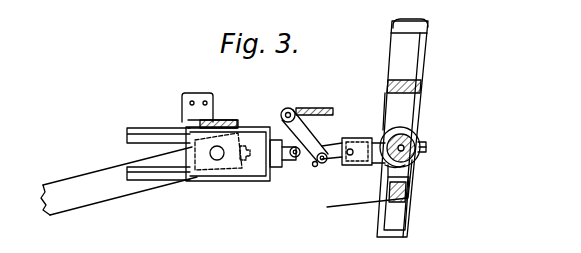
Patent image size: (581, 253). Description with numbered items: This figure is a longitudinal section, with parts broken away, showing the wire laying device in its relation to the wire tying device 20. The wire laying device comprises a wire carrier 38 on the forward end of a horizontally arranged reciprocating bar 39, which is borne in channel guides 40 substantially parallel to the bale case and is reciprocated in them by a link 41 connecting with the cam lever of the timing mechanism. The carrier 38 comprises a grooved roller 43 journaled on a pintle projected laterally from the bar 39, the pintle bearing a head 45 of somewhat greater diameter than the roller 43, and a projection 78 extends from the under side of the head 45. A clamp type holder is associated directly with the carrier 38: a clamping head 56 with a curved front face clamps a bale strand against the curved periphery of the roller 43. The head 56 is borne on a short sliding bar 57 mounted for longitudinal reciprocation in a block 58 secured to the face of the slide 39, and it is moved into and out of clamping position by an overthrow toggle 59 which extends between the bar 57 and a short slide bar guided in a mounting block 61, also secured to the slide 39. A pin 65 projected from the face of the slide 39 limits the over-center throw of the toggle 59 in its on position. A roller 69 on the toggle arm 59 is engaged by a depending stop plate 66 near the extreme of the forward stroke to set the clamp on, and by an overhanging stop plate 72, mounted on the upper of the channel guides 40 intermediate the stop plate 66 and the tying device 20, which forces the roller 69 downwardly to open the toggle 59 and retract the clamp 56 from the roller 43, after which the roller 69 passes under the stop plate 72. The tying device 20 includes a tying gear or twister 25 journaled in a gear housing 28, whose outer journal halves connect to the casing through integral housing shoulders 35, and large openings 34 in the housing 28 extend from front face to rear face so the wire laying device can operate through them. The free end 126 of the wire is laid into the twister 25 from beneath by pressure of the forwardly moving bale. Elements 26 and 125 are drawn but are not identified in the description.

The wire tying device 20 is at (413, 129).
The gear housing 28 is at (395, 25).
The housing shoulder 35 is at (407, 80).
The clamping head 56 is at (382, 128).
The slot 26 is at (400, 215).
The tying gear 25 is at (410, 197).
The free end of wire 126 is at (390, 168).
The opening 34 is at (407, 103).
The head 45 is at (398, 131).
The wire carrier 38 is at (426, 142).
The projection 78 is at (426, 148).
The roller 43 is at (411, 158).
The retainer 125 is at (410, 168).
The block 58 is at (358, 137).
The sliding bar 57 is at (355, 168).
The roller 69 is at (288, 108).
The stop plate 72 is at (306, 108).
The overthrow toggle 59 is at (312, 143).
The pin 65 is at (314, 168).
The mounting block 61 is at (277, 170).
The reciprocating bar 39 is at (242, 170).
The stop plate 66 is at (182, 122).
The channel guides 40 is at (136, 128).
The link 41 is at (82, 180).